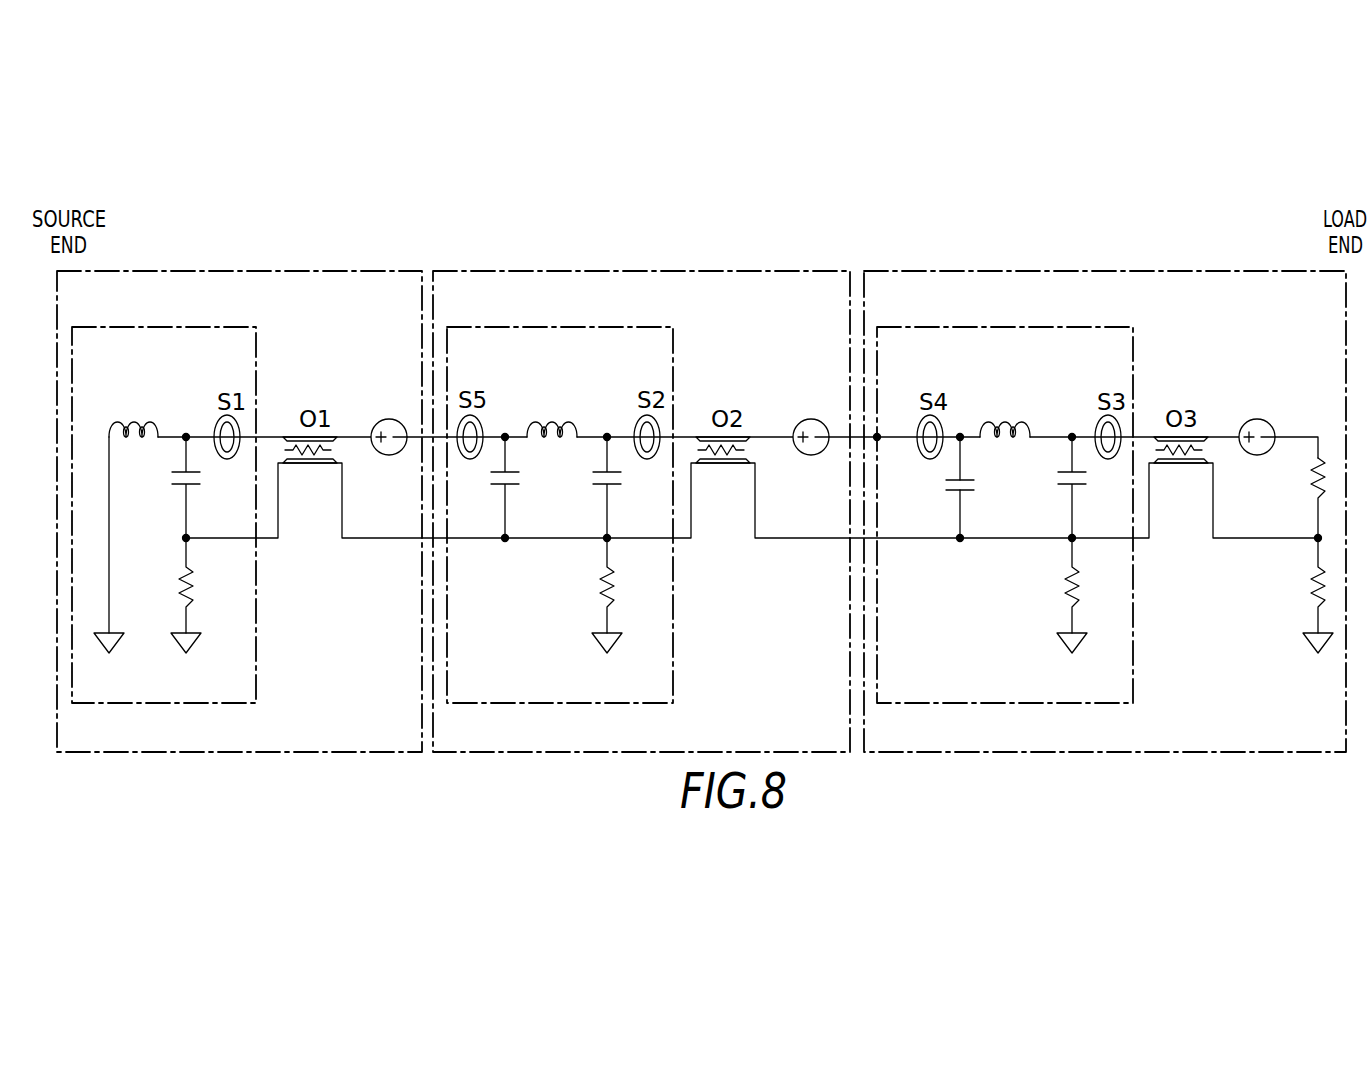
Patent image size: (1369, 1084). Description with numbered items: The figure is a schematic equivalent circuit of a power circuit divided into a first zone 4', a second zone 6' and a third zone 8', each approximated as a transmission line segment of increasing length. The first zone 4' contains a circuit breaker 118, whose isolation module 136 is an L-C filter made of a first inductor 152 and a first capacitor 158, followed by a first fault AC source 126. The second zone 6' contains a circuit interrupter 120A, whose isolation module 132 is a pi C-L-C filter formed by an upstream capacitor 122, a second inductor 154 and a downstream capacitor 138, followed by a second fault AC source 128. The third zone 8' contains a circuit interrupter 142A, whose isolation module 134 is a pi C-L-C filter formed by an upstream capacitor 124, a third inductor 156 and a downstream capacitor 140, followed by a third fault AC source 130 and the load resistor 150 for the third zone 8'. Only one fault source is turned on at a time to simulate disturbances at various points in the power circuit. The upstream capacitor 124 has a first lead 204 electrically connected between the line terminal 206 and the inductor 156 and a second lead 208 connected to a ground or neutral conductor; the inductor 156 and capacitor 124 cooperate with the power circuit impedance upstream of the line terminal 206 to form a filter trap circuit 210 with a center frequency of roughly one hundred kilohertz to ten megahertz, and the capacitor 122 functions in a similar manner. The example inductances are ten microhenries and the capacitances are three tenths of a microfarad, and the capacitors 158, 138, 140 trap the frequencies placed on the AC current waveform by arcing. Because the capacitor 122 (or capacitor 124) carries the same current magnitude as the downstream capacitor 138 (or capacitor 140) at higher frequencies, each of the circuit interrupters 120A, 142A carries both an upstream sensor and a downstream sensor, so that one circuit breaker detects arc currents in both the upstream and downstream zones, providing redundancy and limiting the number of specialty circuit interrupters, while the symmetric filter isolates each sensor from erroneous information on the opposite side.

The first zone 4' is at (239, 492).
The second zone 6' is at (641, 492).
The third zone 8' is at (1105, 492).
The circuit breaker CB1' 118 is at (256, 632).
The circuit interrupter CB2'' 120A is at (673, 632).
The circuit interrupter CB3'' 142A is at (1133, 632).
The inductor L1 152 is at (109, 425).
The isolation module 136 is at (177, 418).
The capacitor C1 158 is at (172, 486).
The fault AC source V1 126 is at (389, 456).
The inductor L2 154 is at (527, 425).
The isolation module 132 is at (595, 418).
The capacitor C4 122 is at (510, 486).
The capacitor C2 138 is at (612, 486).
The fault AC source V2 128 is at (811, 456).
The line terminal 206 is at (877, 437).
The inductor L3 156 is at (978, 425).
The isolation module 134 is at (1047, 418).
The first lead 204 is at (960, 458).
The capacitor C5 124 is at (946, 482).
The second lead 208 is at (960, 518).
The filter trap circuit 210 is at (1016, 476).
The capacitor C3 140 is at (1078, 486).
The fault AC source V3 130 is at (1272, 430).
The resistor R3 150 is at (1312, 500).